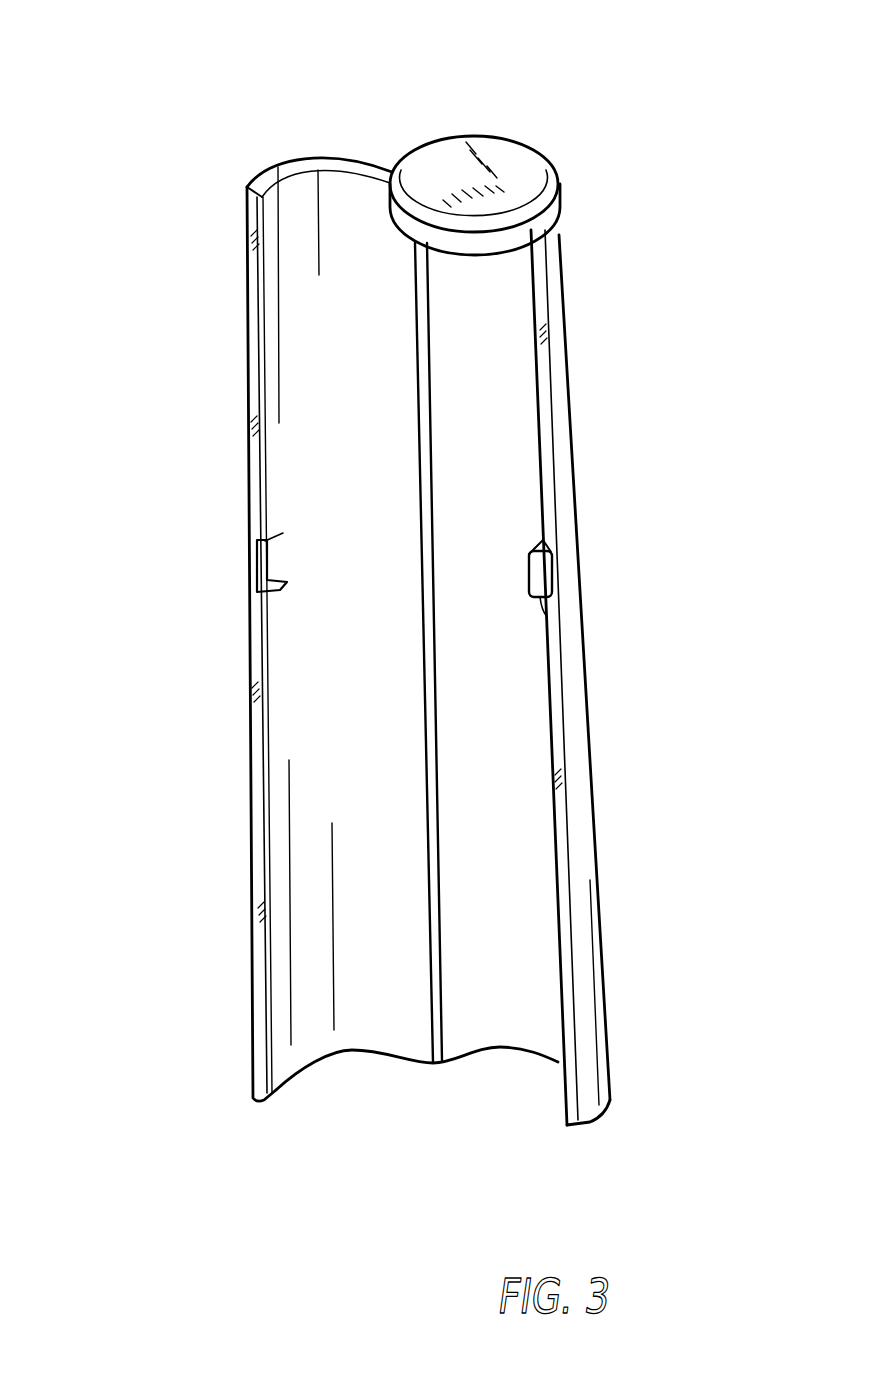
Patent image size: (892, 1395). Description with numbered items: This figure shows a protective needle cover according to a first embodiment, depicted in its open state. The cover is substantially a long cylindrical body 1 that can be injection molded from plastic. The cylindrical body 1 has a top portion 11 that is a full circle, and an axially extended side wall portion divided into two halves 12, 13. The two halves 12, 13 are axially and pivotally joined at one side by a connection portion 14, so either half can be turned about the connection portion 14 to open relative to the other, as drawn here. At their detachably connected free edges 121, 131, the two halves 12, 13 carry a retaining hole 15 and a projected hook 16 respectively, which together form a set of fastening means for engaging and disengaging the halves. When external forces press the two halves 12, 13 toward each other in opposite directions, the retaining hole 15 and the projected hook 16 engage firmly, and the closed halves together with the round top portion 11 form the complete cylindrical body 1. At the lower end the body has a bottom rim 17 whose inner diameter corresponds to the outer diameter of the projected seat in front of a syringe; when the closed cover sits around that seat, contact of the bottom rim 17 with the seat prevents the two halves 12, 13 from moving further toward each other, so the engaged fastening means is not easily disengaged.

The cylindrical body 1 is at (584, 481).
The top portion 11 is at (483, 147).
The half of side wall portion 12 is at (282, 348).
The free edge 121 is at (254, 785).
The half of side wall portion 13 is at (510, 1017).
The free edge 131 is at (558, 717).
The connection portion 14 is at (428, 888).
The retaining hole 15 is at (257, 568).
The projected hook 16 is at (540, 617).
The bottom rim 17 is at (287, 1095).